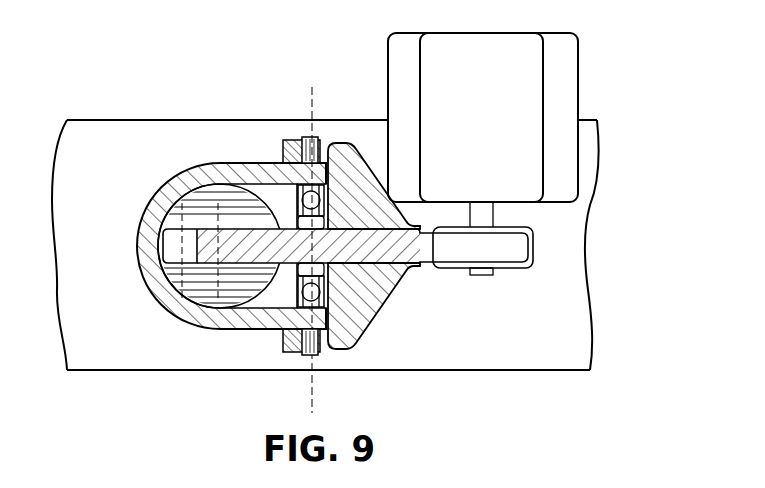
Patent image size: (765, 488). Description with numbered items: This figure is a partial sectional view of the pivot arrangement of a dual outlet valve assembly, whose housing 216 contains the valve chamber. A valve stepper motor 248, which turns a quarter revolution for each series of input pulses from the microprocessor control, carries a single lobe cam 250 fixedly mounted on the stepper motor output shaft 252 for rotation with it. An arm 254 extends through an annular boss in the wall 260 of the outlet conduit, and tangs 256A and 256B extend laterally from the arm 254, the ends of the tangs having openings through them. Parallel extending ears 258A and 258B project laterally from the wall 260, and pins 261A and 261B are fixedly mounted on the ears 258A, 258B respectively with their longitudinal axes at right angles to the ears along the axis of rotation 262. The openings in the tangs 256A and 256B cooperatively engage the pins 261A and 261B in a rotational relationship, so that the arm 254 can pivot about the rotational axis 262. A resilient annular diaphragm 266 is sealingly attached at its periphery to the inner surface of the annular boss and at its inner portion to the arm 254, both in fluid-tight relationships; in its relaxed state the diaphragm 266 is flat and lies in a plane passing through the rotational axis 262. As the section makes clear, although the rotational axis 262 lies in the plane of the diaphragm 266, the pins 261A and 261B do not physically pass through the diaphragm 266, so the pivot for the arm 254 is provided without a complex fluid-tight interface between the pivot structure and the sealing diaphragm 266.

The housing 216 is at (127, 138).
The valve stepper motor 248 is at (502, 52).
The single lobe cam 250 is at (530, 266).
The stepper motor output shaft 252 is at (480, 277).
The arm 254 is at (196, 257).
The tang 256A is at (337, 148).
The tang 256B is at (360, 350).
The ear 258A is at (268, 160).
The ear 258B is at (270, 318).
The wall 260 is at (183, 322).
The pin 261A is at (315, 147).
The pin 261B is at (314, 358).
The axis of rotation 262 is at (312, 102).
The resilient annular diaphragm 266 is at (318, 200).